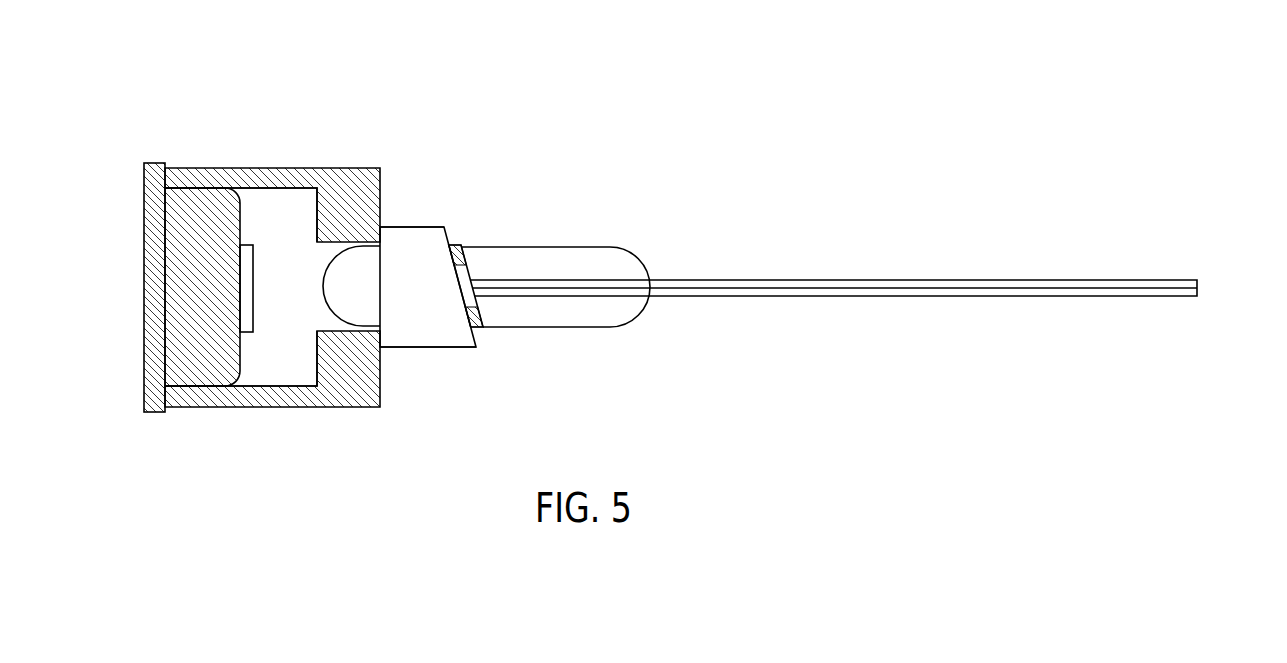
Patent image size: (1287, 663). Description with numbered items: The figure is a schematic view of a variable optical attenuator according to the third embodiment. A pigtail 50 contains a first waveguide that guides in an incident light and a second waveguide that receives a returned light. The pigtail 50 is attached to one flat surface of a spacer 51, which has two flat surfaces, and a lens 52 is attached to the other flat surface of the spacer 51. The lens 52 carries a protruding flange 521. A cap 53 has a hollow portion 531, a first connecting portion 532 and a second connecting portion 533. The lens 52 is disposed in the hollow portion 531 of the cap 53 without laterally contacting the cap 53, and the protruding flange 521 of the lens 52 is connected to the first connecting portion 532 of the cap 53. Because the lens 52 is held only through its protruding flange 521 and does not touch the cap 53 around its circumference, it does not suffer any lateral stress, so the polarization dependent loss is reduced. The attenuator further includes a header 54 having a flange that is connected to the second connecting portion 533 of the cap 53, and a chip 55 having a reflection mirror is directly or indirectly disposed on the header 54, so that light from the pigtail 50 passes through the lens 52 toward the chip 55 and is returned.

The pigtail 50 is at (580, 257).
The spacer 51 is at (455, 245).
The lens 52 is at (402, 287).
The protruding flange 521 is at (400, 233).
The cap 53 is at (296, 92).
The hollow portion 531 is at (286, 196).
The first connecting portion 532 is at (356, 177).
The second connecting portion 533 is at (180, 169).
The header 54 is at (188, 336).
The chip 55 is at (245, 283).